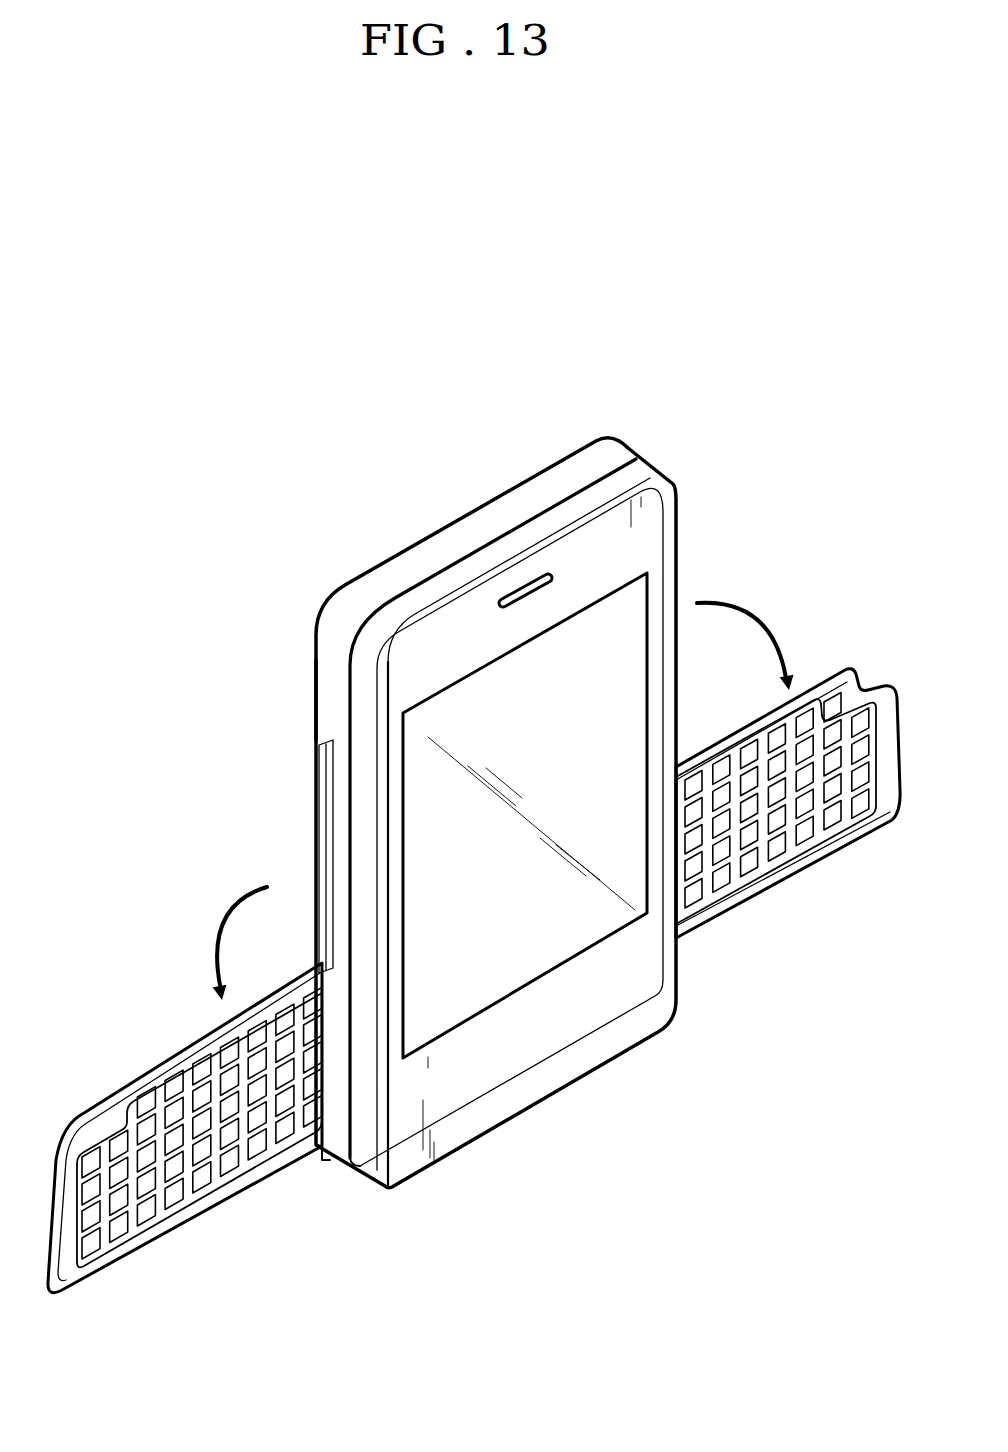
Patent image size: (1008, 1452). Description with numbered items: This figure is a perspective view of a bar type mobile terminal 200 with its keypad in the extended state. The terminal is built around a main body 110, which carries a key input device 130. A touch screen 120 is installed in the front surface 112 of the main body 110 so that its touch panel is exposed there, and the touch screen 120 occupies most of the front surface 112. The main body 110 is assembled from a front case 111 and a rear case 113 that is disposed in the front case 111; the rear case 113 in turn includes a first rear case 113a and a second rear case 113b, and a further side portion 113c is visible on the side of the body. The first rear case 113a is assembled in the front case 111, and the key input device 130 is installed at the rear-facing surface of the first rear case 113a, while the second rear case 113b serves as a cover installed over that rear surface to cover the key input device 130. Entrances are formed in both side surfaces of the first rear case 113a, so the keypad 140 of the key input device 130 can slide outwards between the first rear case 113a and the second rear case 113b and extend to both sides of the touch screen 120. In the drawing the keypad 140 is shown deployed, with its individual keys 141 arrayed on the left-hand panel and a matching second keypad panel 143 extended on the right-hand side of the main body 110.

The mobile terminal 200 is at (160, 382).
The main body 110 is at (728, 363).
The front case 111 is at (687, 512).
The front surface 112 is at (520, 1068).
The rear case 113 is at (630, 441).
The first rear case 113a is at (327, 692).
The second rear case 113b is at (327, 777).
The side rail portion 113c is at (332, 833).
The touch screen 120 is at (553, 957).
The key input device 130 is at (326, 1178).
The keypad 140 is at (168, 1250).
The keys of first keypad 141 is at (96, 1277).
The second keypad panel 143 is at (833, 850).